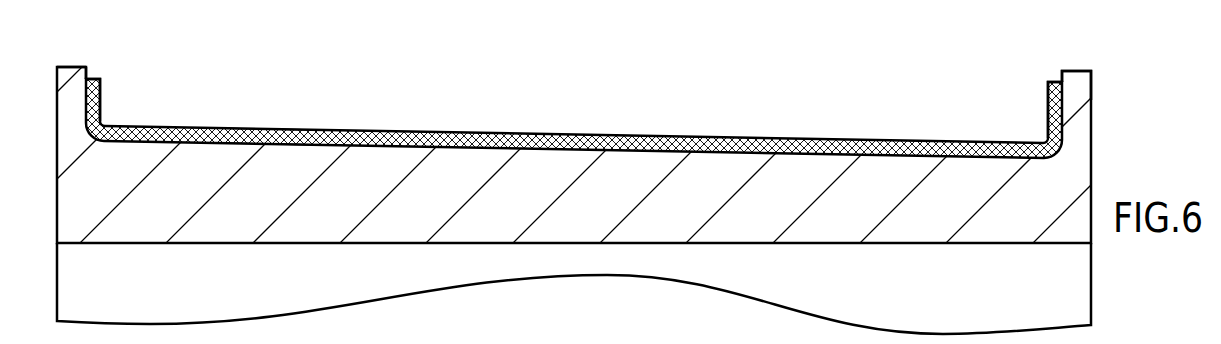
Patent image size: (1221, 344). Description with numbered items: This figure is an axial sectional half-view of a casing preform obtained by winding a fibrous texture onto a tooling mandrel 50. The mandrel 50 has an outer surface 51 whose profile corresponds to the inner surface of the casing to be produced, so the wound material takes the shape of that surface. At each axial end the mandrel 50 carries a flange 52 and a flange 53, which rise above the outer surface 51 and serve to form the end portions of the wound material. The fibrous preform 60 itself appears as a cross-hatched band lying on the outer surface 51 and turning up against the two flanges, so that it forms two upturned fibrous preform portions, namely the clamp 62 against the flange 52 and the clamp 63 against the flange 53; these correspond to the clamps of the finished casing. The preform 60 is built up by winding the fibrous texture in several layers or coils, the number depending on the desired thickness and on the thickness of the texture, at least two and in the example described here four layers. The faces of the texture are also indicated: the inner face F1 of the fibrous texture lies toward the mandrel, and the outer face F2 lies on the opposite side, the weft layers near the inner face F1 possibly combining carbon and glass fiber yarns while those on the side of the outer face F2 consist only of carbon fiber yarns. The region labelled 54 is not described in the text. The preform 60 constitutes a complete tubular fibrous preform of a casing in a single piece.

The mandrel 50 is at (1100, 162).
The outer surface of the mandrel 51 is at (373, 145).
The flange of the mandrel 52 is at (1083, 97).
The flange of the mandrel 53 is at (68, 101).
The lower surface of support 54 is at (575, 332).
The fibrous preform 60 is at (362, 103).
The clamp 62 is at (1048, 102).
The clamp 63 is at (101, 94).
The inner face of the fibrous texture F1 is at (273, 147).
The outer face of the fibrous texture F2 is at (260, 124).